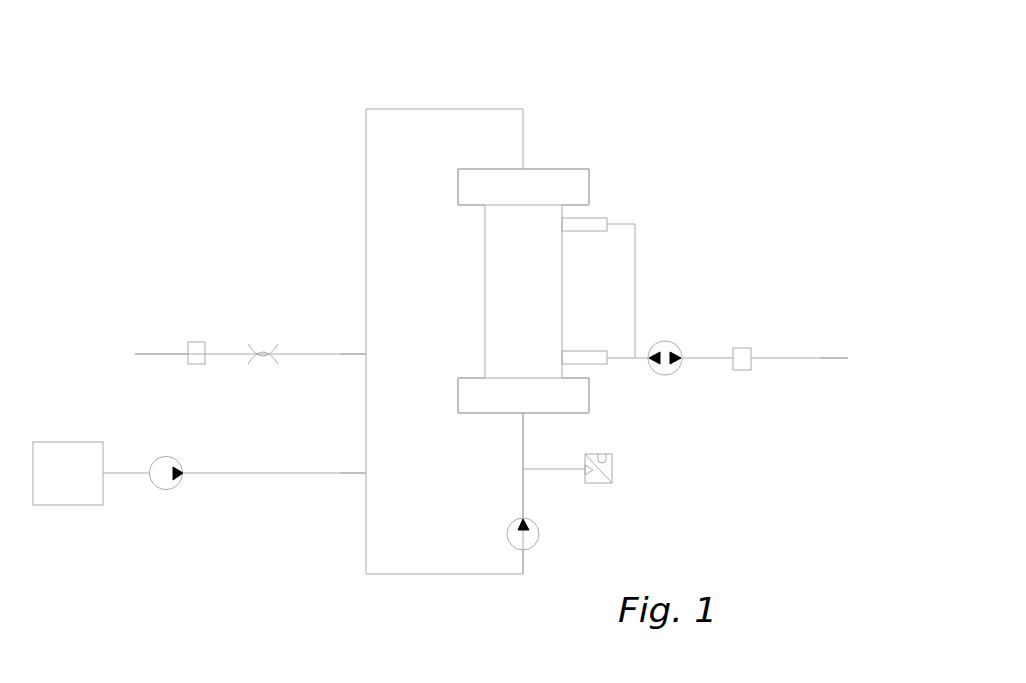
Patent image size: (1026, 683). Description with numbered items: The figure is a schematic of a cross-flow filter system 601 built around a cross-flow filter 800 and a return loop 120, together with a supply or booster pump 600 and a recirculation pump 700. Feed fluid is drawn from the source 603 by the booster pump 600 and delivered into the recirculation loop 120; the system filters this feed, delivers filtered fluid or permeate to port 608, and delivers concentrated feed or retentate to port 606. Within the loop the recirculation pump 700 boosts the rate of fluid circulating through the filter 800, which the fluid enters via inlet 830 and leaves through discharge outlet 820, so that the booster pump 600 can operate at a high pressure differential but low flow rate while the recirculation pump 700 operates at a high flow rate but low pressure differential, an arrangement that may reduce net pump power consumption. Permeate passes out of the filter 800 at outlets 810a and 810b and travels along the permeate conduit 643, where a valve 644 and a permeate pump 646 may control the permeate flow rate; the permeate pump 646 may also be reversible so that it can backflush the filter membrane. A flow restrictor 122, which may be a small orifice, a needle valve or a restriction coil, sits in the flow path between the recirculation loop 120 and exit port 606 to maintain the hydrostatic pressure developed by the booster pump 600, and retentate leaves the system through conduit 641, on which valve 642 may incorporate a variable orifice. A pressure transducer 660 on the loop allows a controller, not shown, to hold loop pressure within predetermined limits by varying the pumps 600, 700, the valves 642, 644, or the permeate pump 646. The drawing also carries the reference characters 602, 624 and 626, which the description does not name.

The cross-flow filter system 601 is at (647, 78).
The return loop 120 is at (363, 178).
The cross-flow filter 800 is at (523, 291).
The discharge outlet 820 is at (518, 163).
The inlet 830 is at (520, 415).
The permeate outlet 810a is at (589, 213).
The permeate outlet 810b is at (582, 348).
The retentate port 606 is at (130, 349).
The retentate conduit 641 is at (165, 358).
The valve 642 is at (197, 335).
The flow restrictor 122 is at (263, 345).
The inlet port of housing 626 is at (365, 348).
The source fluid inlet port 624 is at (365, 472).
The source 603 is at (63, 440).
The supply/booster pump 600 is at (143, 484).
The source fluid line 602 is at (253, 472).
The recirculation pump 700 is at (540, 493).
The pressure transducer 660 is at (584, 470).
The permeate pump 646 is at (680, 343).
The valve 644 is at (748, 345).
The permeate conduit 643 is at (788, 353).
The permeate port 608 is at (848, 358).